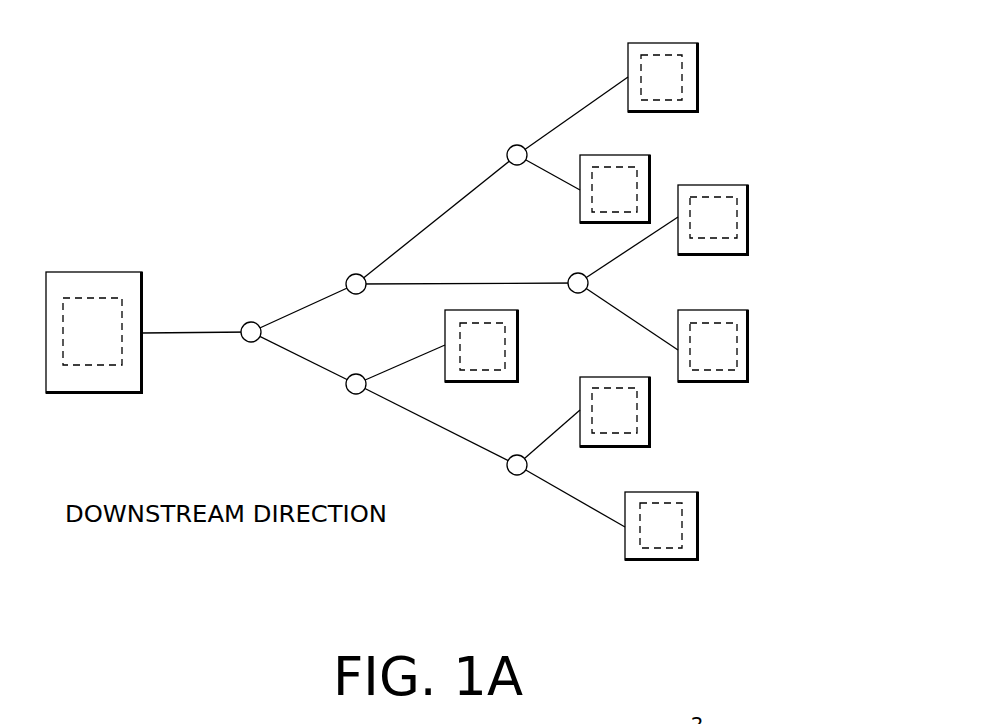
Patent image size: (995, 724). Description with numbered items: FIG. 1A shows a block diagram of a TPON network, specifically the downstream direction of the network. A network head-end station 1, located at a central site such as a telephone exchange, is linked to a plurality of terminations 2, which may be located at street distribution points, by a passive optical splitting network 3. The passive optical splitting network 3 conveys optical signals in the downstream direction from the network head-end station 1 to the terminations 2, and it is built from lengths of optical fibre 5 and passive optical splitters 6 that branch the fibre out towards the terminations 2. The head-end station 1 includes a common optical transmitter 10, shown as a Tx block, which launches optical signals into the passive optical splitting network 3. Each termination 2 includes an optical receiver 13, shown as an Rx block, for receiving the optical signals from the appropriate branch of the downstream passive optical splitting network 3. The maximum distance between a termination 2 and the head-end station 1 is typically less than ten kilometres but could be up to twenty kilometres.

The network head-end station 1 is at (83, 272).
The terminations 2 is at (673, 43).
The passive optical splitting network 3 is at (398, 216).
The optical fibre 5 is at (377, 263).
The passive optical splitters 6 is at (255, 342).
The common optical transmitter 10 is at (92, 368).
The optical receiver 13 is at (697, 58).